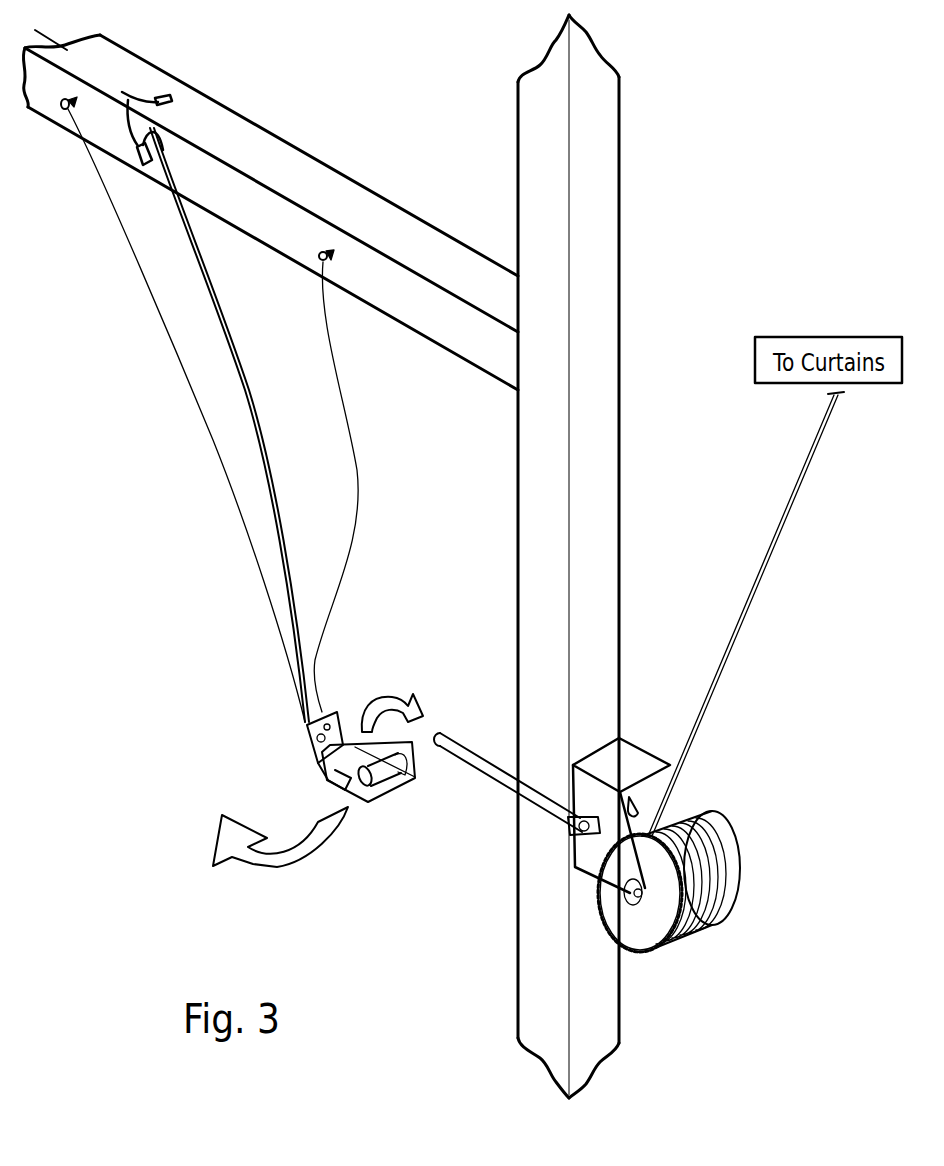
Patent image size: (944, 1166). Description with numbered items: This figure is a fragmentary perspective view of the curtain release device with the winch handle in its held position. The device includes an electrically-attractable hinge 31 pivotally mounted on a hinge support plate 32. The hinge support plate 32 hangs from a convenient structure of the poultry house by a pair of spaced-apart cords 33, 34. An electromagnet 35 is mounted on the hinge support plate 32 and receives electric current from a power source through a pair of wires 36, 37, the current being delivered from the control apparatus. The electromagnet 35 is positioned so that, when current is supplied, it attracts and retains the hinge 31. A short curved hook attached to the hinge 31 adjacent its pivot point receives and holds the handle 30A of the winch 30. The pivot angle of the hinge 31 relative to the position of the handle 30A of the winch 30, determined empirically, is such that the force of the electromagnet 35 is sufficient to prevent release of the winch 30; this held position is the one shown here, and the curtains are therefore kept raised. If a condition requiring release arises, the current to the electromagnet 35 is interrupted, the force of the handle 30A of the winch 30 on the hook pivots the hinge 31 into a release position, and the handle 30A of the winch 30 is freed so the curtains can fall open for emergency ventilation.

The winch 30 is at (635, 757).
The handle 30A is at (433, 728).
The electrically-attractable hinge 31 is at (332, 786).
The hinge support plate 32 is at (366, 800).
The cord 33 is at (372, 470).
The cord 34 is at (255, 547).
The electromagnet 35 is at (307, 758).
The wire 36 is at (237, 366).
The wire 37 is at (233, 366).